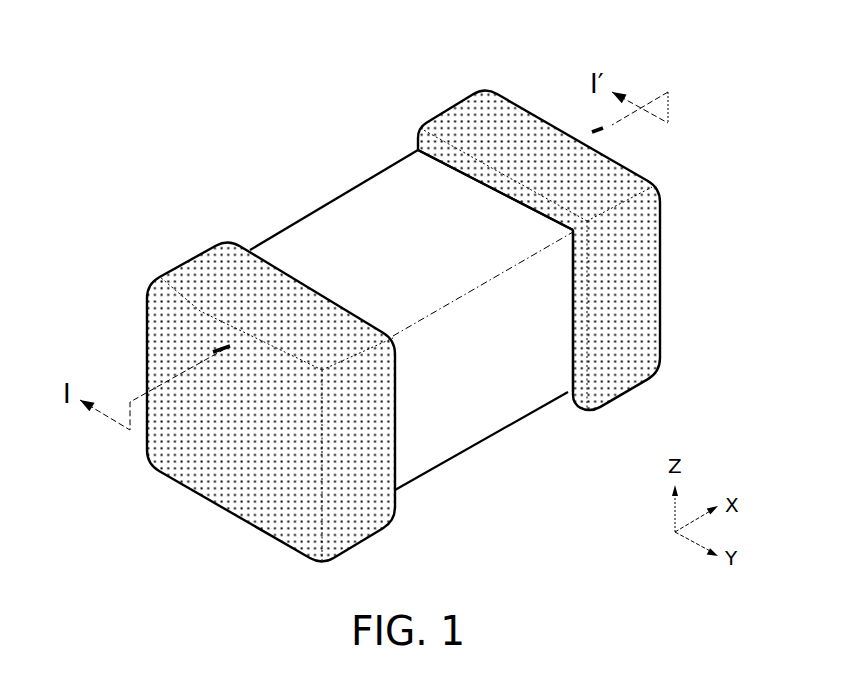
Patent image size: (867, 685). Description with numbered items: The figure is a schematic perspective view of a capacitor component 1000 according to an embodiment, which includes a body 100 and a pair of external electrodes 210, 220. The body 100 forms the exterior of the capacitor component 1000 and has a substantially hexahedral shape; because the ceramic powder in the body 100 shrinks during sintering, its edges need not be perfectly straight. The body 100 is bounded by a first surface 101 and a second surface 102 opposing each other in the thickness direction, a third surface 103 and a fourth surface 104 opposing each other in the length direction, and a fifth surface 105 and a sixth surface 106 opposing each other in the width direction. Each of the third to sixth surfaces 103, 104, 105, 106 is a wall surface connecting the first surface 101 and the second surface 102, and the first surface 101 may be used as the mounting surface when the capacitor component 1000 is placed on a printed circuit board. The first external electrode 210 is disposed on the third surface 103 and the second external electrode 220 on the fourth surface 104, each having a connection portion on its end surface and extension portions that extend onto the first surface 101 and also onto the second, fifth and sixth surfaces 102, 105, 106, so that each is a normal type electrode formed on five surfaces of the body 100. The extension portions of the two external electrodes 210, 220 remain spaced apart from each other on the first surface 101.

The capacitor component 1000 is at (195, 64).
The body 100 is at (403, 160).
The first surface 101 is at (445, 410).
The second surface 102 is at (358, 220).
The third surface 103 is at (240, 472).
The fourth surface 104 is at (607, 268).
The fifth surface 105 is at (487, 388).
The sixth surface 106 is at (337, 253).
The first external electrode 210 is at (205, 275).
The second external electrode 220 is at (467, 123).